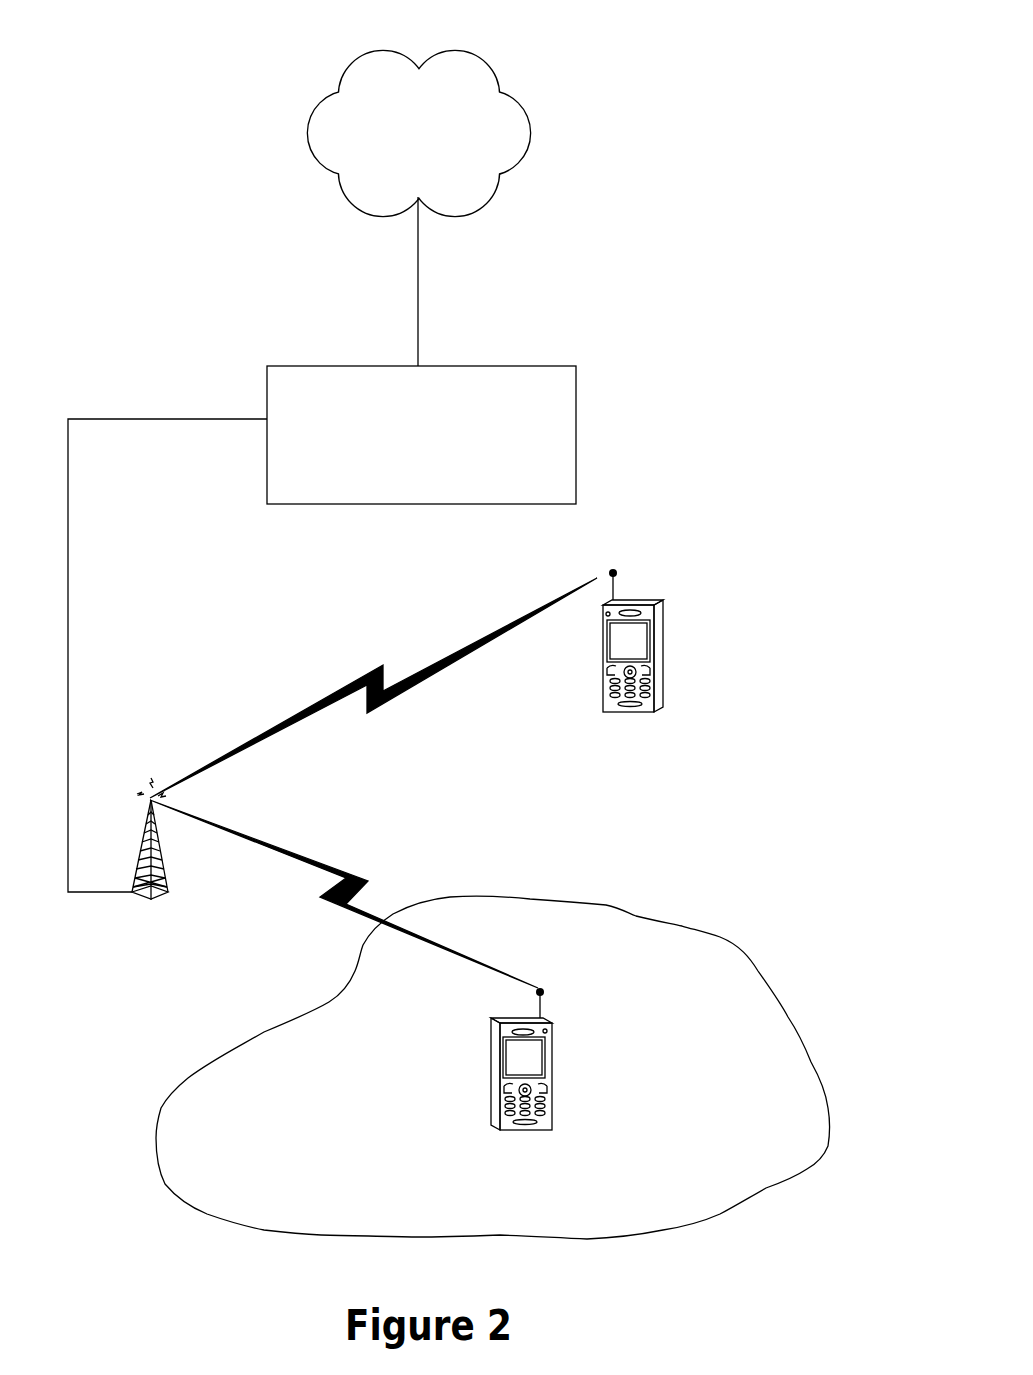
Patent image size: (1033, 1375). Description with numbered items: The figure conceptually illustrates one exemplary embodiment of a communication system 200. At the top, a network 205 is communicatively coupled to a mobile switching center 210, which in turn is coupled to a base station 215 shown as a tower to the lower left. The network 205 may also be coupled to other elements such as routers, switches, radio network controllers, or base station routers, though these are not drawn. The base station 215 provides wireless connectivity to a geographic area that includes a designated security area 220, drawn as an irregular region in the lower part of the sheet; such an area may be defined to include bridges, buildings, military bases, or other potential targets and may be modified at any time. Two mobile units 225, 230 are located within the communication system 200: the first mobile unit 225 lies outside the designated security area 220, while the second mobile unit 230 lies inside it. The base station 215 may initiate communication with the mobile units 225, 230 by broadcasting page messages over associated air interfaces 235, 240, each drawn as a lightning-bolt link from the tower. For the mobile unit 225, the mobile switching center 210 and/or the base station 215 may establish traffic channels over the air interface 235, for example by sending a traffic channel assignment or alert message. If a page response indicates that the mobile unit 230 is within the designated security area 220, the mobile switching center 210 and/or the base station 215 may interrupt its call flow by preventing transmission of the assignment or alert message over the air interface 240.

The communication system 200 is at (650, 73).
The network 205 is at (403, 166).
The mobile switching center 210 is at (394, 480).
The base station 215 is at (150, 900).
The designated security area 220 is at (674, 916).
The mobile unit 225 is at (665, 678).
The mobile unit 230 is at (553, 1085).
The air interface 235 is at (372, 667).
The air interface 240 is at (350, 873).